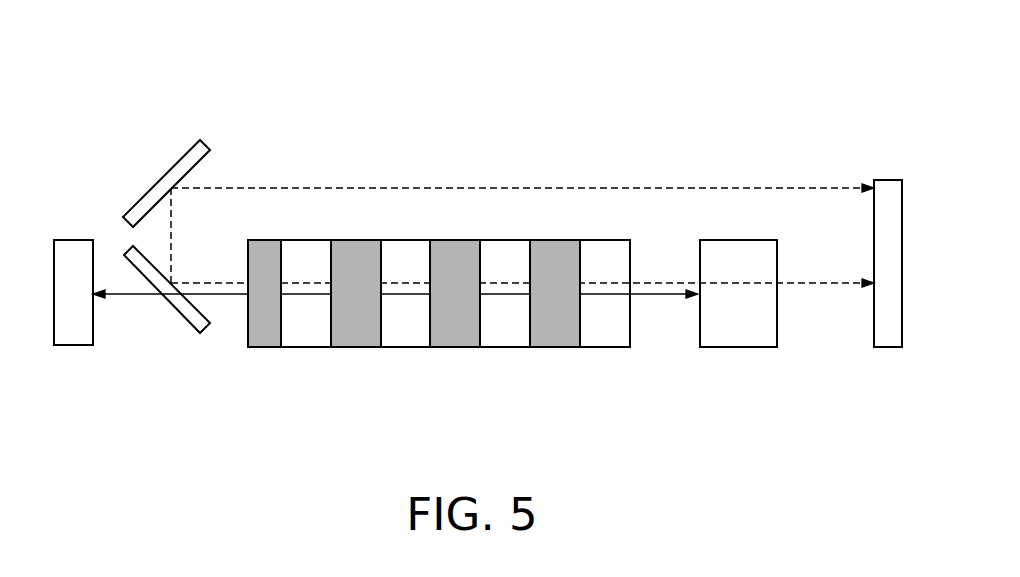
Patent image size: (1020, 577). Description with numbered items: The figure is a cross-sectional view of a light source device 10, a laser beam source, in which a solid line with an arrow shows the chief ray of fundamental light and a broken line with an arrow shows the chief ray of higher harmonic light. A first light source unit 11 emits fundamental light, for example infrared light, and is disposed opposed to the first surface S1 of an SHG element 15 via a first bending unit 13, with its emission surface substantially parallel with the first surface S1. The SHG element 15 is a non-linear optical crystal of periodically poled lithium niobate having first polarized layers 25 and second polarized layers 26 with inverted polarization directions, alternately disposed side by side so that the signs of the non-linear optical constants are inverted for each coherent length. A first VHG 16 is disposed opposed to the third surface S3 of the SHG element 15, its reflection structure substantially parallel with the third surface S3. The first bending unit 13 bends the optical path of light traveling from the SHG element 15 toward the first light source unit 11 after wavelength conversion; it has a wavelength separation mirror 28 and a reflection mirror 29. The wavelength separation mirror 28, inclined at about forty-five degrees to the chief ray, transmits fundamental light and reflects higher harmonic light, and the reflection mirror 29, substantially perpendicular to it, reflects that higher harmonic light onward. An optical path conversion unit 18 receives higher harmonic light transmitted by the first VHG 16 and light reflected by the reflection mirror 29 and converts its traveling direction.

The light source device 10 is at (310, 56).
The first light source unit 11 is at (75, 242).
The first bending unit 13 is at (90, 96).
The wavelength separation mirror 28 is at (123, 252).
The reflection mirror 29 is at (181, 166).
The SHG element 15 is at (304, 392).
The first polarized layers 25 is at (552, 340).
The second polarized layers 26 is at (502, 340).
The first VHG 16 is at (750, 340).
The optical path conversion unit 18 is at (888, 185).
The first surface S1 is at (247, 331).
The third surface S3 is at (630, 330).